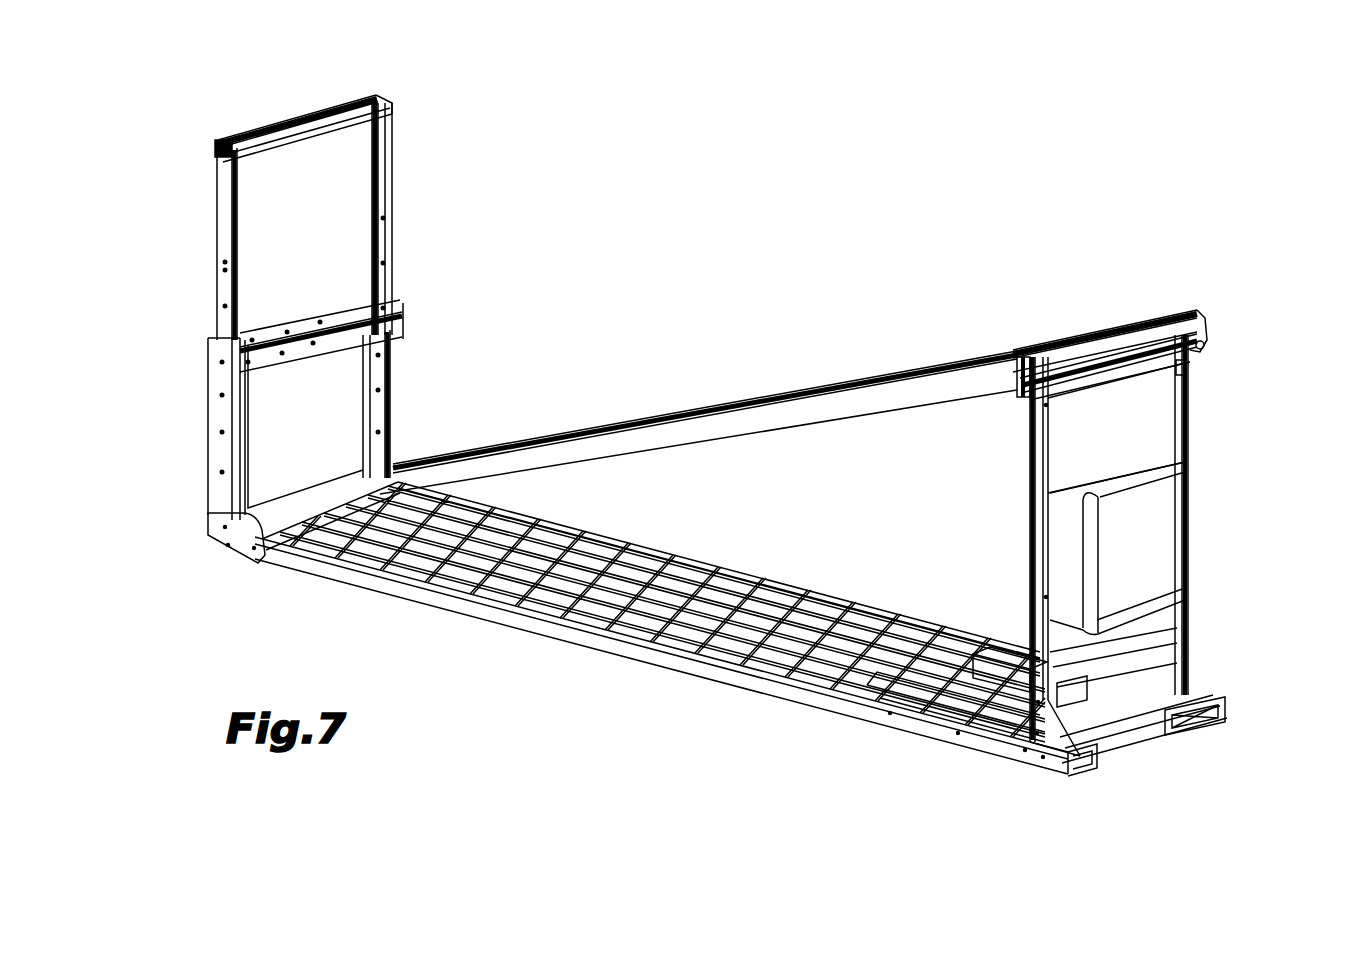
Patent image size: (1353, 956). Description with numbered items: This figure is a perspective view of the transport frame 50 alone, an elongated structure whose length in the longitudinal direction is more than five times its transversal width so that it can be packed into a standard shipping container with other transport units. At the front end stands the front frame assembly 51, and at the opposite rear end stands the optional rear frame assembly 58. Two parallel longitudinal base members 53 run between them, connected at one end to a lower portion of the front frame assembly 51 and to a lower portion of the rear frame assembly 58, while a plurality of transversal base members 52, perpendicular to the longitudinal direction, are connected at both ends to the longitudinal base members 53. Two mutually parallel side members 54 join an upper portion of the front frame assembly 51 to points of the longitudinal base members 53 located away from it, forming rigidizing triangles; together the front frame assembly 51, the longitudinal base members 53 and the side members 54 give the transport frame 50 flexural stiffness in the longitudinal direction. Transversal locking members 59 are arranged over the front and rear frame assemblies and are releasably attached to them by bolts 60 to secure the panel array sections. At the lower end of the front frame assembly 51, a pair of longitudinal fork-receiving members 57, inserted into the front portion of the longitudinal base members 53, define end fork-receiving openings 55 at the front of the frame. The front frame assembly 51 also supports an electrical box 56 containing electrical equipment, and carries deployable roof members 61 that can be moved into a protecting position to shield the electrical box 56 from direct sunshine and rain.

The transport frame 50 is at (706, 166).
The front frame assembly 51 is at (1203, 441).
The transversal base members 52 is at (698, 597).
The longitudinal base members 53 is at (606, 636).
The side members 54 is at (624, 416).
The end fork-receiving openings 55 is at (1090, 760).
The electrical box 56 is at (1178, 537).
The longitudinal fork-receiving members 57 is at (1013, 632).
The rear frame assembly 58 is at (192, 264).
The locking members 59 is at (283, 126).
The bolts 60 is at (218, 150).
The deployable roof members 61 is at (1178, 412).